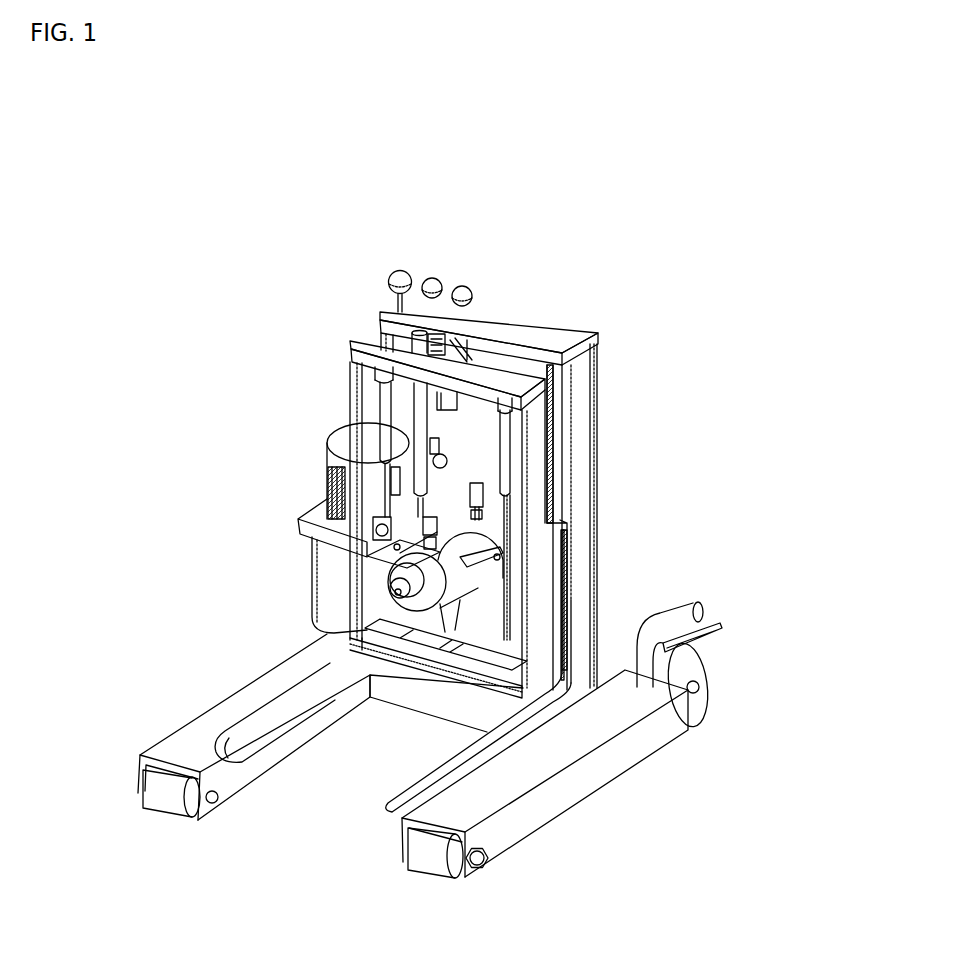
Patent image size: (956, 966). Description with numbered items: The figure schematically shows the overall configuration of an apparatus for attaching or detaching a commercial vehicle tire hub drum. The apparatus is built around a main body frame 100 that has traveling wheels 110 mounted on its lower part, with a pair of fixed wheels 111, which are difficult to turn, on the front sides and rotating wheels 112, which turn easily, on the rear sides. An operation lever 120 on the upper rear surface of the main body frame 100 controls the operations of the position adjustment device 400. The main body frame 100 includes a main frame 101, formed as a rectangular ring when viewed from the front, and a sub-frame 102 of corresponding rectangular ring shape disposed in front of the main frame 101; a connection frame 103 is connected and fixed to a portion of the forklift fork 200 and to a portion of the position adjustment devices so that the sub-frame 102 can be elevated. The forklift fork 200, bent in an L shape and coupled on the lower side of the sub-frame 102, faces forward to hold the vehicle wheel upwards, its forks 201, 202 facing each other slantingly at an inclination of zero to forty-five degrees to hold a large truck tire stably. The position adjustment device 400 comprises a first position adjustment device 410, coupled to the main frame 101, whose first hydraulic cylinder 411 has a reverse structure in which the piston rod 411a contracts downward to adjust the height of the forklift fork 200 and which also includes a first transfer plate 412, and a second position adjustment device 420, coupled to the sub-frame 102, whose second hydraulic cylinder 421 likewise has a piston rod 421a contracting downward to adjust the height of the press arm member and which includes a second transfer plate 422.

The main body frame 100 is at (680, 405).
The main frame 101 is at (575, 412).
The sub-frame 102 is at (533, 477).
The connection frame 103 is at (580, 580).
The traveling wheels 110 is at (491, 767).
The fixed wheels 111 is at (443, 863).
The rotating wheels 112 is at (707, 662).
The operation lever 120 is at (430, 277).
The forklift fork 200 is at (432, 767).
The fork 201 is at (267, 713).
The fork 202 is at (537, 773).
The position adjustment device 400 is at (116, 446).
The first position adjustment device 410 is at (178, 422).
The first hydraulic cylinder 411 is at (423, 437).
The piston rod 411a is at (540, 505).
The first transfer plate 412 is at (395, 465).
The second position adjustment device 420 is at (178, 493).
The second hydraulic cylinder 421 is at (380, 483).
The piston rod 421a is at (335, 503).
The second transfer plate 422 is at (312, 526).